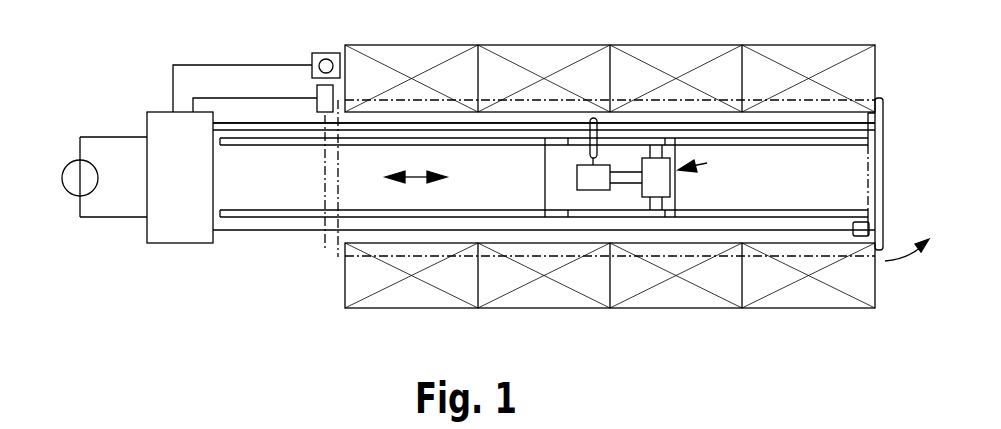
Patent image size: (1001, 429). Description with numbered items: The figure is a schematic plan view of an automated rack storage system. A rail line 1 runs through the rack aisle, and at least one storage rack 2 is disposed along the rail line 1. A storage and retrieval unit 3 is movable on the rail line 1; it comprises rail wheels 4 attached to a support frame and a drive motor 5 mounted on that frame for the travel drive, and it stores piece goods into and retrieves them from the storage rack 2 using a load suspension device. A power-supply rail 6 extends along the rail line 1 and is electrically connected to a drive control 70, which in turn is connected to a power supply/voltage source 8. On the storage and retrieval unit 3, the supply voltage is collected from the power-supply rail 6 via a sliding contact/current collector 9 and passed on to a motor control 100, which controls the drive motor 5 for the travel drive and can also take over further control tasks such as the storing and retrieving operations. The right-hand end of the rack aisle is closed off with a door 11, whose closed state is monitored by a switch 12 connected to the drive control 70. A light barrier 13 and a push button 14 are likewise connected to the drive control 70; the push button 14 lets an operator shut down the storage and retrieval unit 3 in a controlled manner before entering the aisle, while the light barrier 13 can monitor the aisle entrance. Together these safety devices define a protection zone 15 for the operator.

The rail line 1 is at (243, 213).
The storage rack 2 is at (858, 86).
The storage and retrieval unit 3 is at (706, 164).
The rail wheels 4 is at (560, 142).
The drive motor 5 is at (663, 185).
The power-supply rail 6 is at (260, 126).
The power supply/voltage source 8 is at (68, 182).
The sliding contact/current collector 9 is at (594, 118).
The door 11 is at (875, 157).
The switch 12 is at (872, 230).
The light barrier 13 is at (318, 92).
The push button 14 is at (312, 58).
The protection zone 15 is at (530, 98).
The drive control 70 is at (153, 125).
The motor control 100 is at (580, 185).